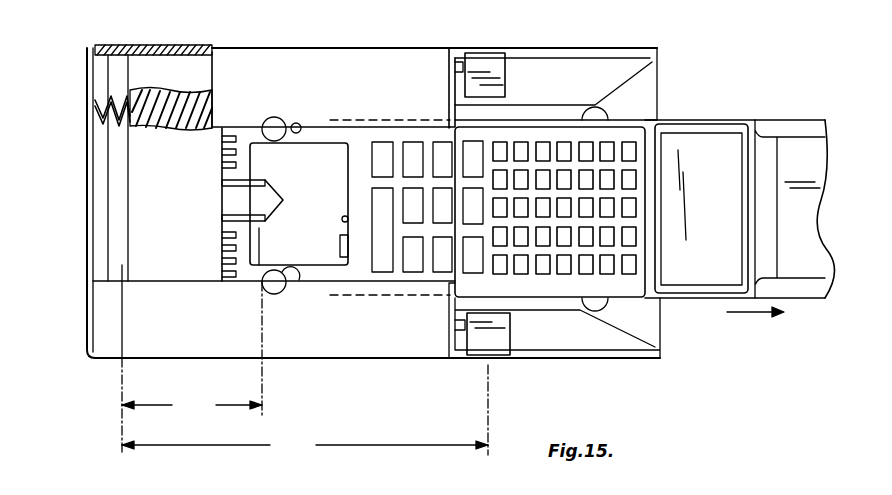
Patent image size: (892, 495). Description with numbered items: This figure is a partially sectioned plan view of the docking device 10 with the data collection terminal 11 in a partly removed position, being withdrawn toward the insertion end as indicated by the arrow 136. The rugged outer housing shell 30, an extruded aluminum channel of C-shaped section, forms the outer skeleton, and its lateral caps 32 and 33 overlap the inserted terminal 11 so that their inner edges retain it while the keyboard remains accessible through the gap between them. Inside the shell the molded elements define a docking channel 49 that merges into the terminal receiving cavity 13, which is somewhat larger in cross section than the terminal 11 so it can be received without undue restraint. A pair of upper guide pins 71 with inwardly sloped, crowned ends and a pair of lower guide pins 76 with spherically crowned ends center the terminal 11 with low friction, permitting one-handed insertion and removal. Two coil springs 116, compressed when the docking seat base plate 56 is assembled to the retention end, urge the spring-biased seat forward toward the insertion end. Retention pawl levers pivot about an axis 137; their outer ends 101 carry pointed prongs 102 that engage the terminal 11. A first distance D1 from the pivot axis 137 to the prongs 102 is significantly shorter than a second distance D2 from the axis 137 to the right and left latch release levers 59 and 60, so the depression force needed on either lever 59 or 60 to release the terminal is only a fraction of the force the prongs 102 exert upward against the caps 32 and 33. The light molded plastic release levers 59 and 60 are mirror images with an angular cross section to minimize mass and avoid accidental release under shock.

The docking device 10 is at (609, 36).
The data collection terminal 11 is at (696, 108).
The terminal receiving cavity 13 is at (325, 270).
The outer housing shell 30 is at (214, 44).
The lateral cap 32 is at (323, 120).
The lateral cap 33 is at (420, 292).
The docking channel 49 is at (303, 130).
The docking seat base plate 56 is at (87, 213).
The right latch release lever 59 is at (500, 350).
The left latch release lever 60 is at (482, 60).
The upper guide pin 71 is at (597, 112).
The lower guide pin 76 is at (276, 118).
The outer end of pawl lever 101 is at (222, 202).
The pointed prong 102 is at (284, 200).
The coil spring 116 is at (100, 97).
The arrow 136 is at (747, 313).
The pivot axis 137 is at (122, 365).
The first distance D1 is at (192, 348).
The second distance D2 is at (305, 410).